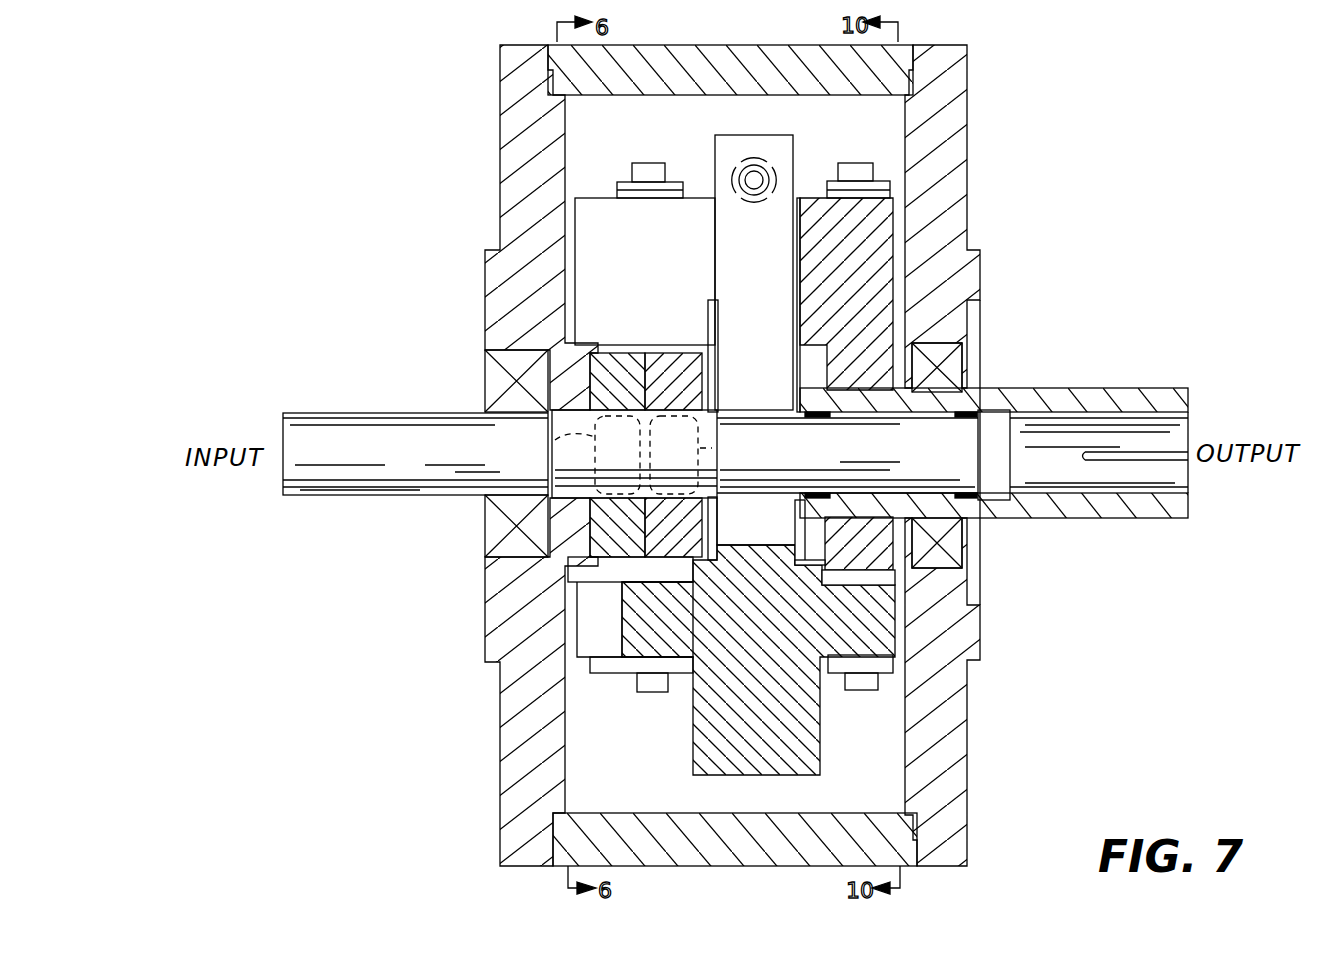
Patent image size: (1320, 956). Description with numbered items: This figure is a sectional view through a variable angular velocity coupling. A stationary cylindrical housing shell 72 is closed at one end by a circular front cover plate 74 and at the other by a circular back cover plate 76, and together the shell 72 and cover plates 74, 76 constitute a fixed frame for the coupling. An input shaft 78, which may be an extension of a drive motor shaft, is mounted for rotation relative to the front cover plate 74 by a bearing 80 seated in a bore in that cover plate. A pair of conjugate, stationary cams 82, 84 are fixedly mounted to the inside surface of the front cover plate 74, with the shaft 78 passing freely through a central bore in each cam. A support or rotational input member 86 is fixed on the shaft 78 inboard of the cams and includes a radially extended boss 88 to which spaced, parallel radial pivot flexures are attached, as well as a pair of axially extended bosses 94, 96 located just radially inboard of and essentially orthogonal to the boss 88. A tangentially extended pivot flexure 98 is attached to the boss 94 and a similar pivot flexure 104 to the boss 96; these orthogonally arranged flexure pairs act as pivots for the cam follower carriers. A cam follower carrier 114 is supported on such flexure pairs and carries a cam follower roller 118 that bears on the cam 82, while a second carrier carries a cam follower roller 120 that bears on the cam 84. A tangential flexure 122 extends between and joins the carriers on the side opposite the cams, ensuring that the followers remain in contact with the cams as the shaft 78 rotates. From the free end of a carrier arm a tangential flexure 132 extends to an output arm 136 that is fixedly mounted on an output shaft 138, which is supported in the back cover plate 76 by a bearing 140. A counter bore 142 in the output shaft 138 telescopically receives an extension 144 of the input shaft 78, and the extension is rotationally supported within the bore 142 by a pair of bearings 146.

The stationary cylindrical housing shell 72 is at (757, 852).
The front cover plate 74 is at (517, 718).
The back cover plate 76 is at (960, 735).
The input shaft 78 is at (335, 500).
The bearing 80 is at (490, 512).
The stationary cam 82 is at (626, 355).
The stationary cam 84 is at (678, 355).
The support or rotational input member 86 is at (790, 142).
The radially extended boss 88 is at (712, 712).
The axially extended boss 94 is at (640, 607).
The axially extended boss 96 is at (832, 660).
The pivot flexure 98 is at (628, 668).
The pivot flexure 104 is at (893, 660).
The cam follower carrier 114 is at (672, 230).
The cam follower roller 118 is at (552, 448).
The cam follower roller 120 is at (690, 455).
The tangential flexure 122 is at (678, 182).
The tangential flexure 132 is at (872, 183).
The output arm 136 is at (810, 225).
The output shaft 138 is at (1100, 512).
The bearing 140 is at (955, 358).
The counter bore 142 is at (962, 393).
The extension of input shaft 144 is at (955, 457).
The bearing 146 is at (975, 505).